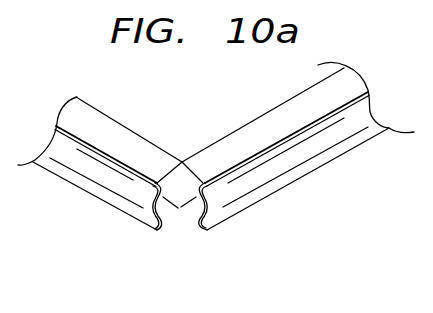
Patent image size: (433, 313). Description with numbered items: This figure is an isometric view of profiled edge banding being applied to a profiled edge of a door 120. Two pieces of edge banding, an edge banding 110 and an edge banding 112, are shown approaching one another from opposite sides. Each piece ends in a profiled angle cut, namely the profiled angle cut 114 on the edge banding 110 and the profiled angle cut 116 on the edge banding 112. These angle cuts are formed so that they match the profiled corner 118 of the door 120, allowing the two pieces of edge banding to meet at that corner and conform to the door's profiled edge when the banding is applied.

The edge banding 110 is at (100, 179).
The edge banding 112 is at (298, 173).
The profiled angle cut 114 is at (168, 229).
The profiled angle cut 116 is at (195, 227).
The profiled corner 118 is at (180, 207).
The door 120 is at (102, 132).